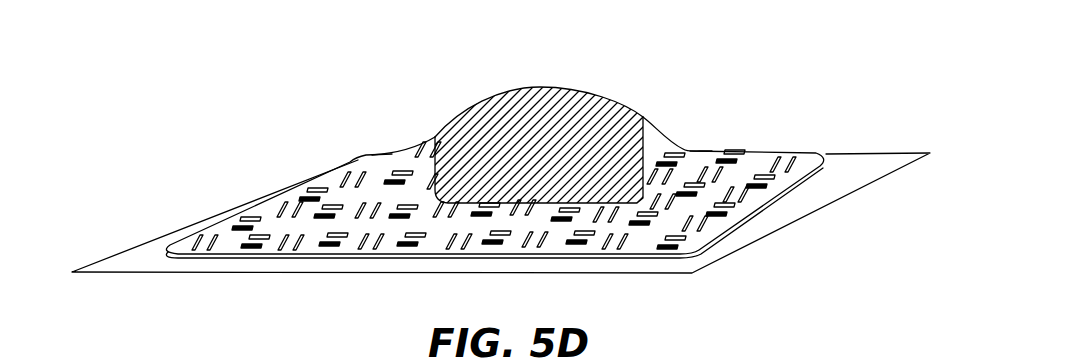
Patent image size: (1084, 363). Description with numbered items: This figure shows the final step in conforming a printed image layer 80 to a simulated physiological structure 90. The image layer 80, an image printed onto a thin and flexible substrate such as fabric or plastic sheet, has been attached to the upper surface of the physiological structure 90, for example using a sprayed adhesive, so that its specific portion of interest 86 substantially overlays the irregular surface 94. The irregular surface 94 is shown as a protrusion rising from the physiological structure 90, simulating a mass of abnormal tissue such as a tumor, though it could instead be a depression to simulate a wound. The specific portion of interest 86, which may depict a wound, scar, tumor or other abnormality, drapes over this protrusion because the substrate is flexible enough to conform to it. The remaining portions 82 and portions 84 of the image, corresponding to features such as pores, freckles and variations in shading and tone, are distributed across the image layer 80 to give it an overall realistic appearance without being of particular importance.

The image layer 80 is at (520, 254).
The portions 82 is at (792, 154).
The portions 84 is at (747, 207).
The specific portion of interest 86 is at (456, 106).
The simulated physiological structure 90 is at (153, 239).
The irregular surface 94 is at (603, 95).